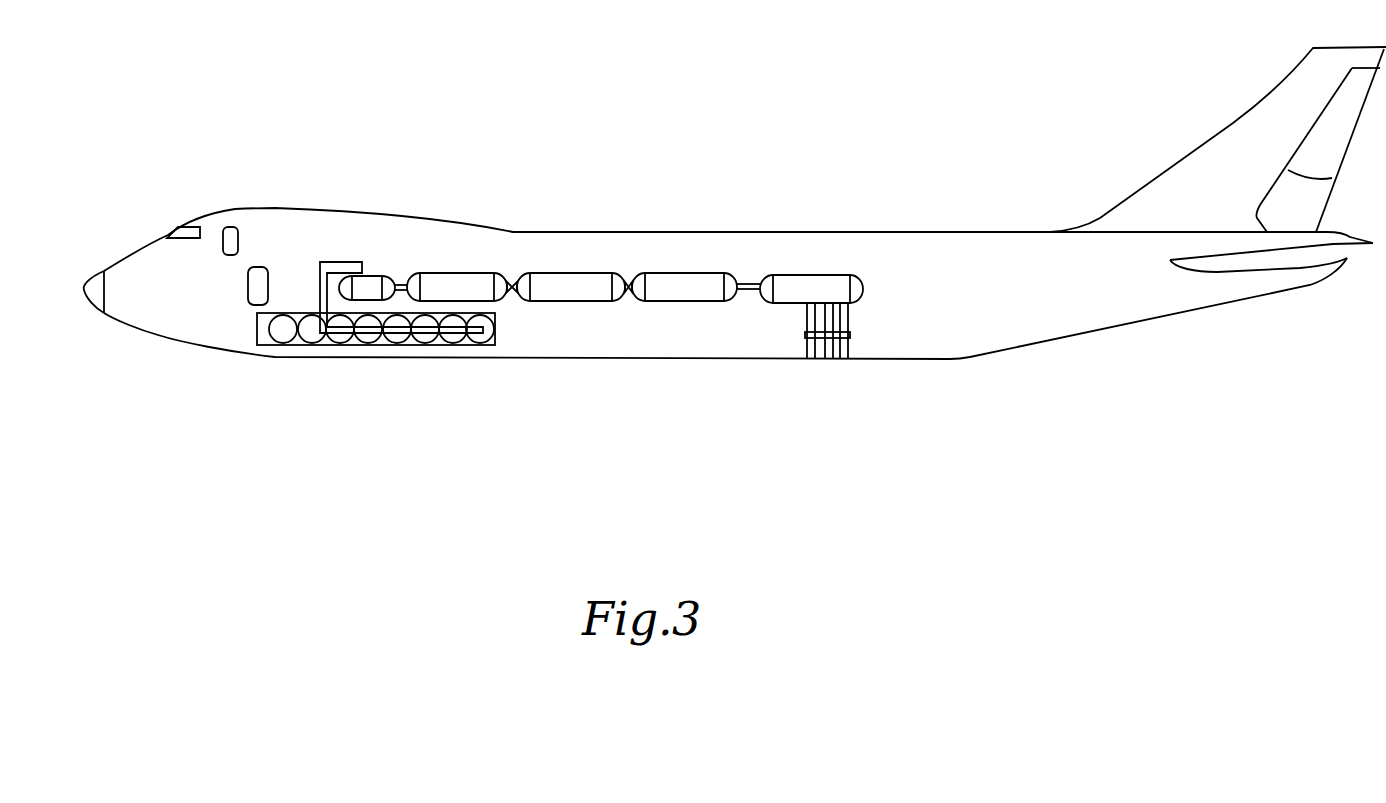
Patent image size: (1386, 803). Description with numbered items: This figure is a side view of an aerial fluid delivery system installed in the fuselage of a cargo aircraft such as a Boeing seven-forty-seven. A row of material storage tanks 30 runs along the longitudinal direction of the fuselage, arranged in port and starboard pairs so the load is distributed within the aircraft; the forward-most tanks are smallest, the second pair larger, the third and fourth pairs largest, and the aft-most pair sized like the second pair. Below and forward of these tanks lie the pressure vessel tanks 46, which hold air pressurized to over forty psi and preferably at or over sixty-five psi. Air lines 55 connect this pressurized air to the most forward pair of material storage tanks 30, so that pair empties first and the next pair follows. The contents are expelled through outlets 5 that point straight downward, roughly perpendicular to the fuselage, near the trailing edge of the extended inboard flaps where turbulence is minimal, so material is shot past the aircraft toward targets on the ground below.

The outlets 5 is at (822, 350).
The material storage tanks 30 is at (377, 276).
The pressure vessel tanks 46 is at (282, 337).
The air lines 55 is at (330, 262).